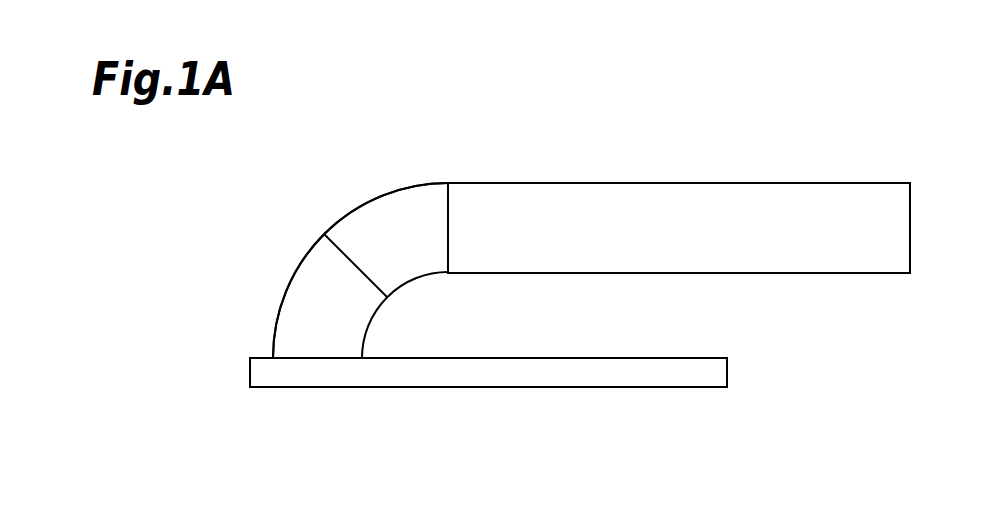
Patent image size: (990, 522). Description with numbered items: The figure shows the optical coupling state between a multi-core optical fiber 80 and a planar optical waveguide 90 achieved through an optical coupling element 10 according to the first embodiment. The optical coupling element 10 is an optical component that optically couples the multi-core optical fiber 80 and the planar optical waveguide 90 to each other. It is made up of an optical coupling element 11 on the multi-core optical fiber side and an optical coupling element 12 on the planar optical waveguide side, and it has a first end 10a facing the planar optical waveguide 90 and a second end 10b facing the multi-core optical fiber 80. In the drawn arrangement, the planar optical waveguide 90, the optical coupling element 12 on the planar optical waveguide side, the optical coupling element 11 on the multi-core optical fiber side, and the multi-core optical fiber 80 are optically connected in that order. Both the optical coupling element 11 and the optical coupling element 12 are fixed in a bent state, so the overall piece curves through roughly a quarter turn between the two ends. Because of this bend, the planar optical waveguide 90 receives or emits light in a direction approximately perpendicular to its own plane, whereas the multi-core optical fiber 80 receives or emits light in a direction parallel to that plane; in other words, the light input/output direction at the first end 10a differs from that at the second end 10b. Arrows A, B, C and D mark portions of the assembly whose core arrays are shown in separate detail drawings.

The optical coupling element 10 is at (344, 152).
The optical coupling element on the multi-core optical fiber side 11 is at (356, 216).
The optical coupling element on the planar optical waveguide side 12 is at (309, 270).
The first end 10a is at (303, 359).
The second end 10b is at (448, 207).
The multi-core optical fiber 80 is at (733, 195).
The planar optical waveguide 90 is at (675, 388).
The arrow A is at (278, 383).
The arrow B is at (337, 348).
The arrow C is at (409, 270).
The arrow D is at (686, 258).